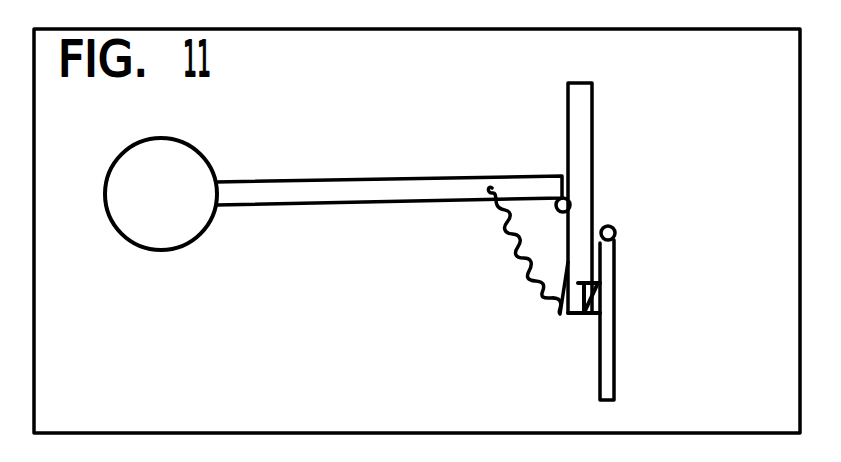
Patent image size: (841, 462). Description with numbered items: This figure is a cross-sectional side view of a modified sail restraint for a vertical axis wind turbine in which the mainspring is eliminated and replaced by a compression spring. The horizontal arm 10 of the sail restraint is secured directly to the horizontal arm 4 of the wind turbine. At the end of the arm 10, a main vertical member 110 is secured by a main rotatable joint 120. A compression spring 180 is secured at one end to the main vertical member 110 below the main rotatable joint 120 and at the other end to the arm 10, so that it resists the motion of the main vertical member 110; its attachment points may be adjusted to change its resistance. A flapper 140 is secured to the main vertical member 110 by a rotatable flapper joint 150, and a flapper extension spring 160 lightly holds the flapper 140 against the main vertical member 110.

The horizontal arm of the wind turbine 4 is at (134, 246).
The arm 10 is at (322, 180).
The main vertical member 110 is at (593, 120).
The main rotatable joint 120 is at (560, 173).
The flapper 140 is at (618, 264).
The rotatable flapper joint 150 is at (616, 228).
The flapper extension spring 160 is at (573, 311).
The compression spring 180 is at (518, 230).